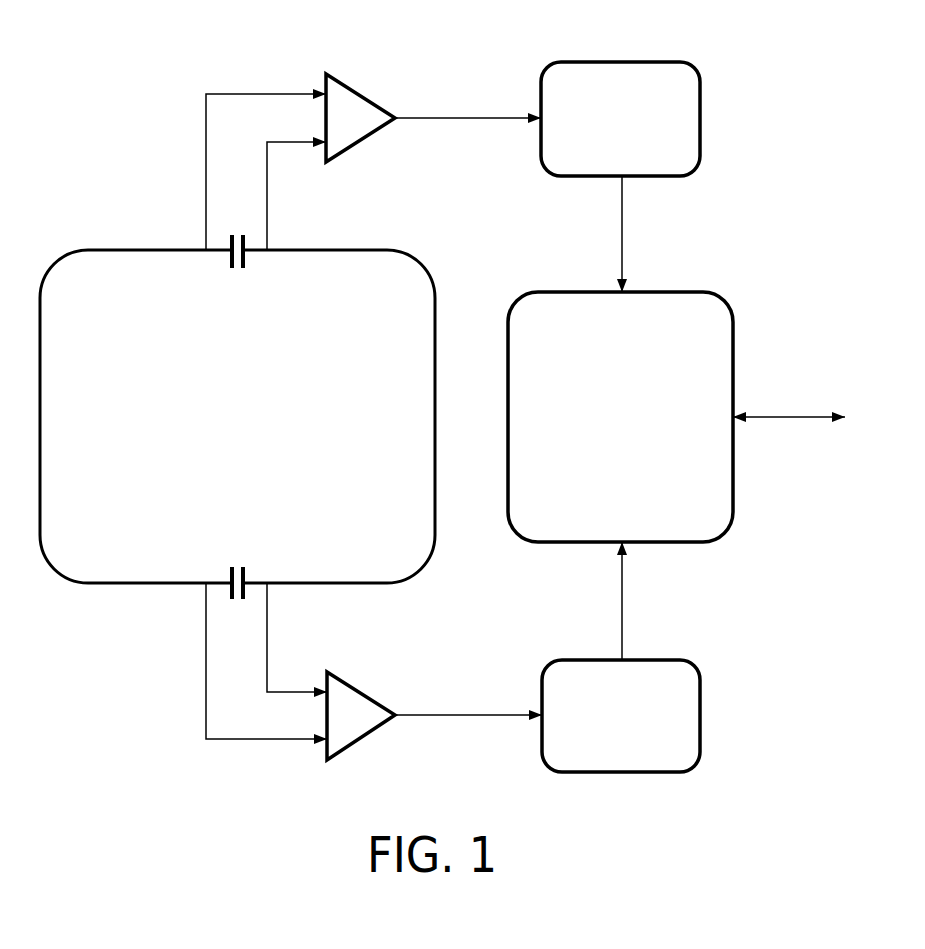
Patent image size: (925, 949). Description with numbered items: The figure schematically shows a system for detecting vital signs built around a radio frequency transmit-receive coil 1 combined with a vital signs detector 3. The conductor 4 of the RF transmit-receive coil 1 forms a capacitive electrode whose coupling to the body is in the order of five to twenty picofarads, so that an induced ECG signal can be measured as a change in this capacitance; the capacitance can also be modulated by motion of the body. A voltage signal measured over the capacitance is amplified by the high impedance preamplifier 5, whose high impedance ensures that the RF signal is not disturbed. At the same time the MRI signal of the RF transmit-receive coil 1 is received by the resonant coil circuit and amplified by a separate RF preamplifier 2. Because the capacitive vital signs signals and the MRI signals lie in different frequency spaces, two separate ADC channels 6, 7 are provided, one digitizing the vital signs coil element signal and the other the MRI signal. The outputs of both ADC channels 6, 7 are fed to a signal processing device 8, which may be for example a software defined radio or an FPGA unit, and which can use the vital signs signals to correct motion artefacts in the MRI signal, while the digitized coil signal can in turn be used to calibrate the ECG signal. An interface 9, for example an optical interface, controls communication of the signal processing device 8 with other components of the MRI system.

The radio frequency transmit-receive coil 1 is at (95, 597).
The RF preamplifier 2 is at (362, 690).
The vital signs detector 3 is at (93, 89).
The conductor 4 is at (211, 258).
The high impedance preamplifier 5 is at (362, 92).
The ADC channel 6 is at (700, 118).
The ADC channel 7 is at (700, 716).
The signal processing device 8 is at (733, 350).
The interface 9 is at (783, 428).